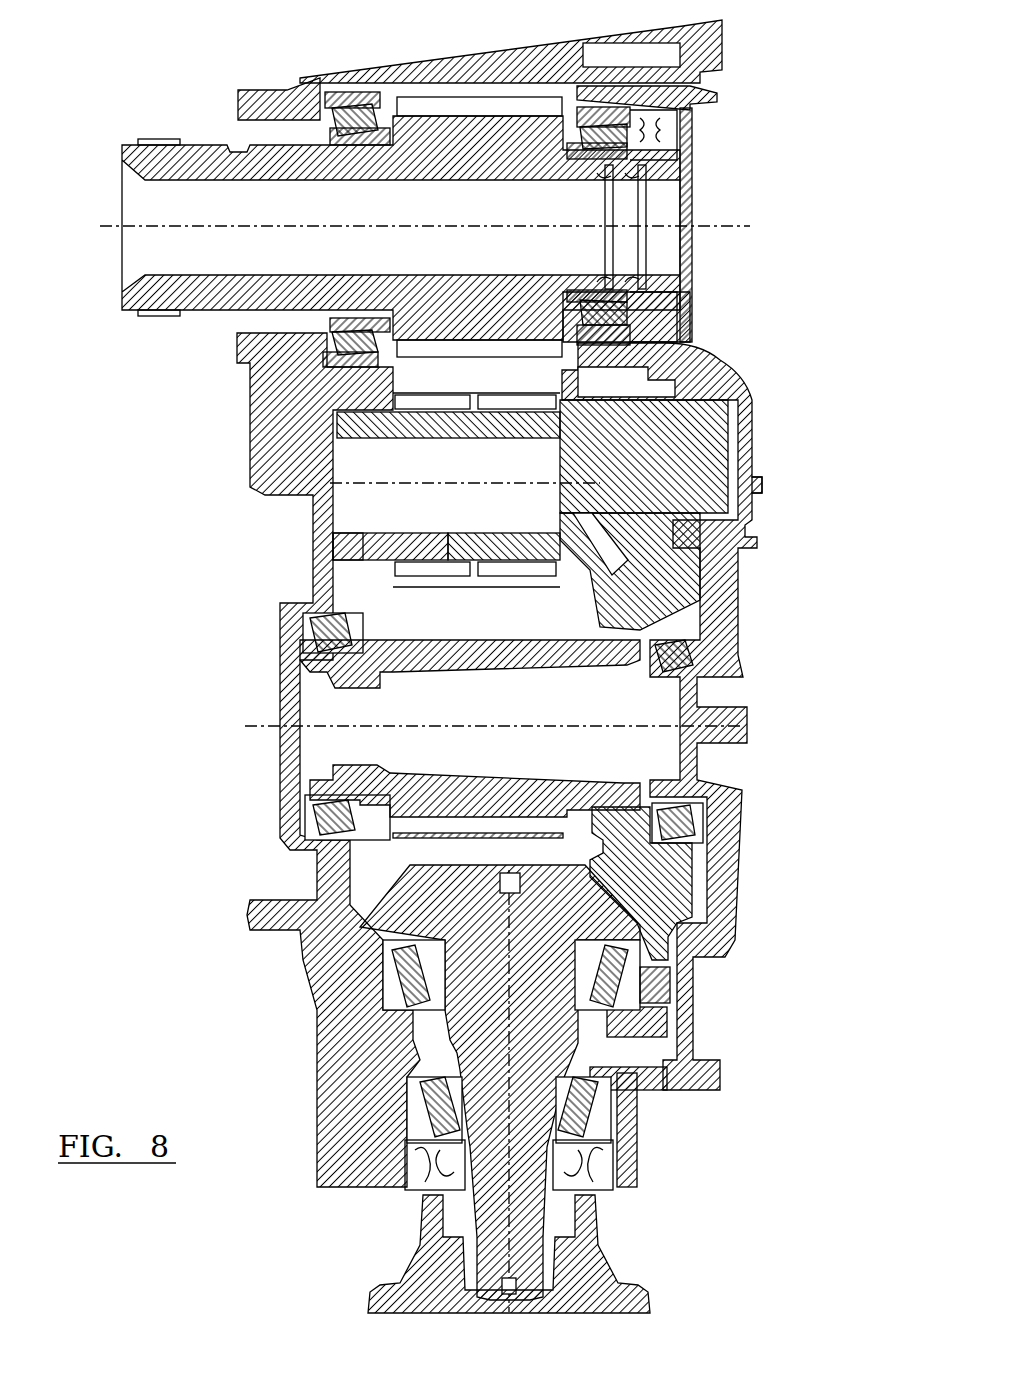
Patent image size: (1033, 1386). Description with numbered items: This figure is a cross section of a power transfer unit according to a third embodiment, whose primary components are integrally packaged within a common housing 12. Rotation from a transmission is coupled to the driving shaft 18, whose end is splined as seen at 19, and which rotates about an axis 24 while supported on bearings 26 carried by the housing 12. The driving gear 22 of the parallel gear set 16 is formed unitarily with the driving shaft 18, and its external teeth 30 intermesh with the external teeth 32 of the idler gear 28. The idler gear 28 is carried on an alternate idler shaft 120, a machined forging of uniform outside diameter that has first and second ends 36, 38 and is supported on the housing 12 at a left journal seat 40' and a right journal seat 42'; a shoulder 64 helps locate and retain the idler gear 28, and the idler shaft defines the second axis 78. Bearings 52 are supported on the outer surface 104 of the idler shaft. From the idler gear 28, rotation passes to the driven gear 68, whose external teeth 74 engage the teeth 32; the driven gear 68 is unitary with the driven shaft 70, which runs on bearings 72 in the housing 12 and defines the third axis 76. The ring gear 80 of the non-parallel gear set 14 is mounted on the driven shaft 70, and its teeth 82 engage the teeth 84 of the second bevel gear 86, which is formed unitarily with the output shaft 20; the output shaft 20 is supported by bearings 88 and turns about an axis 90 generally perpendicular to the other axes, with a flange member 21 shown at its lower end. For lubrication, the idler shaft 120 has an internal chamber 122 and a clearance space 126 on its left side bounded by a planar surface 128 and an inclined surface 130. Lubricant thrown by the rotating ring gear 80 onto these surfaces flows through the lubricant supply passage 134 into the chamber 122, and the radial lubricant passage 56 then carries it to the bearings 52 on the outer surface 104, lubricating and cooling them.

The housing 12 is at (340, 1157).
The non-parallel gear set 14 is at (718, 985).
The parallel gear set 16 is at (368, 58).
The driving shaft 18 is at (178, 280).
The splined end 19 is at (166, 314).
The output shaft 20 is at (530, 1195).
The yoke flange nut 21 is at (580, 1288).
The driving gear 22 is at (460, 162).
The axis 24 is at (740, 222).
The bearings 26 is at (322, 88).
The idler gear 28 is at (413, 368).
The external teeth 30 is at (480, 115).
The external teeth 32 is at (425, 345).
The first end 36 is at (327, 427).
The second end 38 is at (713, 467).
The journal seat 40' is at (304, 541).
The journal seat 42' is at (769, 492).
The bearings 52 is at (513, 403).
The lubricant passage 56 is at (473, 560).
The shoulder 64 is at (680, 340).
The driven gear 68 is at (413, 830).
The driven shaft 70 is at (350, 673).
The bearings 72 is at (327, 633).
The external teeth 74 is at (407, 588).
The third axis 76 is at (290, 726).
The second axis 78 is at (300, 500).
The ring gear 80 is at (670, 583).
The teeth 82 is at (657, 940).
The teeth 84 is at (295, 906).
The second bevel gear 86 is at (335, 985).
The bearings 88 is at (403, 1013).
The axis 90 is at (422, 1233).
The outer surface 104 is at (347, 423).
The idler shaft 120 is at (697, 438).
The internal chamber 122 is at (390, 527).
The clearance space 126 is at (615, 590).
The planar surface 128 is at (663, 527).
The inclined surface 130 is at (585, 545).
The lubricant supply passage 134 is at (600, 560).